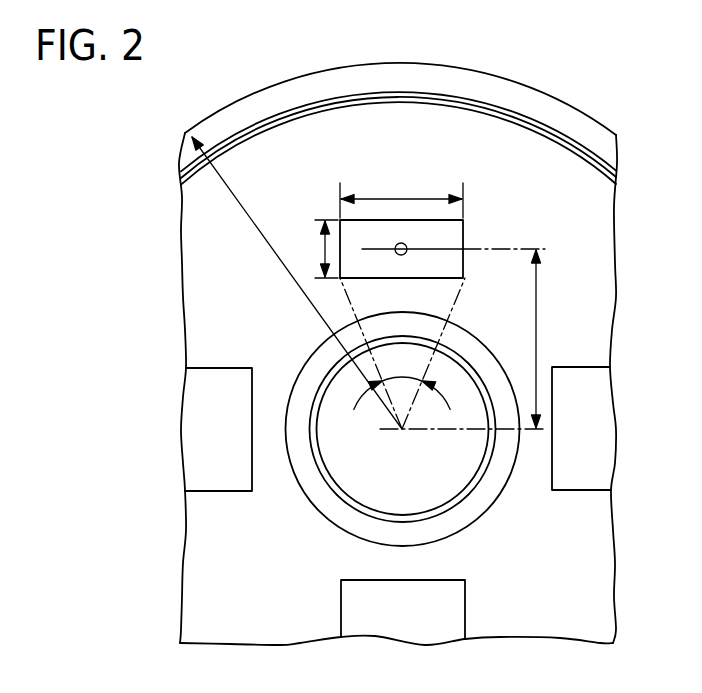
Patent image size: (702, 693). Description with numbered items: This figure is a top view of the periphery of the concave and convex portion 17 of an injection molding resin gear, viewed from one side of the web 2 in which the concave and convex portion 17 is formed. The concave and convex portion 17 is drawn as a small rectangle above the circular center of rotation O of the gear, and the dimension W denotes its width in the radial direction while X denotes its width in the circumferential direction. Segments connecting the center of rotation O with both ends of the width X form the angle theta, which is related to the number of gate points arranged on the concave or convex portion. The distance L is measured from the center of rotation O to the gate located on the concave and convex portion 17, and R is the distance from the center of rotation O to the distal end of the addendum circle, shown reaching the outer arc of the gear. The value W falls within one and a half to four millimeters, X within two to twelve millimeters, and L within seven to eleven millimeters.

The web 2 is at (468, 137).
The concave and convex portion 17 is at (463, 233).
The distance to distal end of addendum circle R is at (297, 283).
The center of rotation O is at (442, 355).
The width in the circumferential direction X is at (401, 195).
The width in the radial direction W is at (316, 249).
The distance from center of rotation to gate L is at (544, 339).